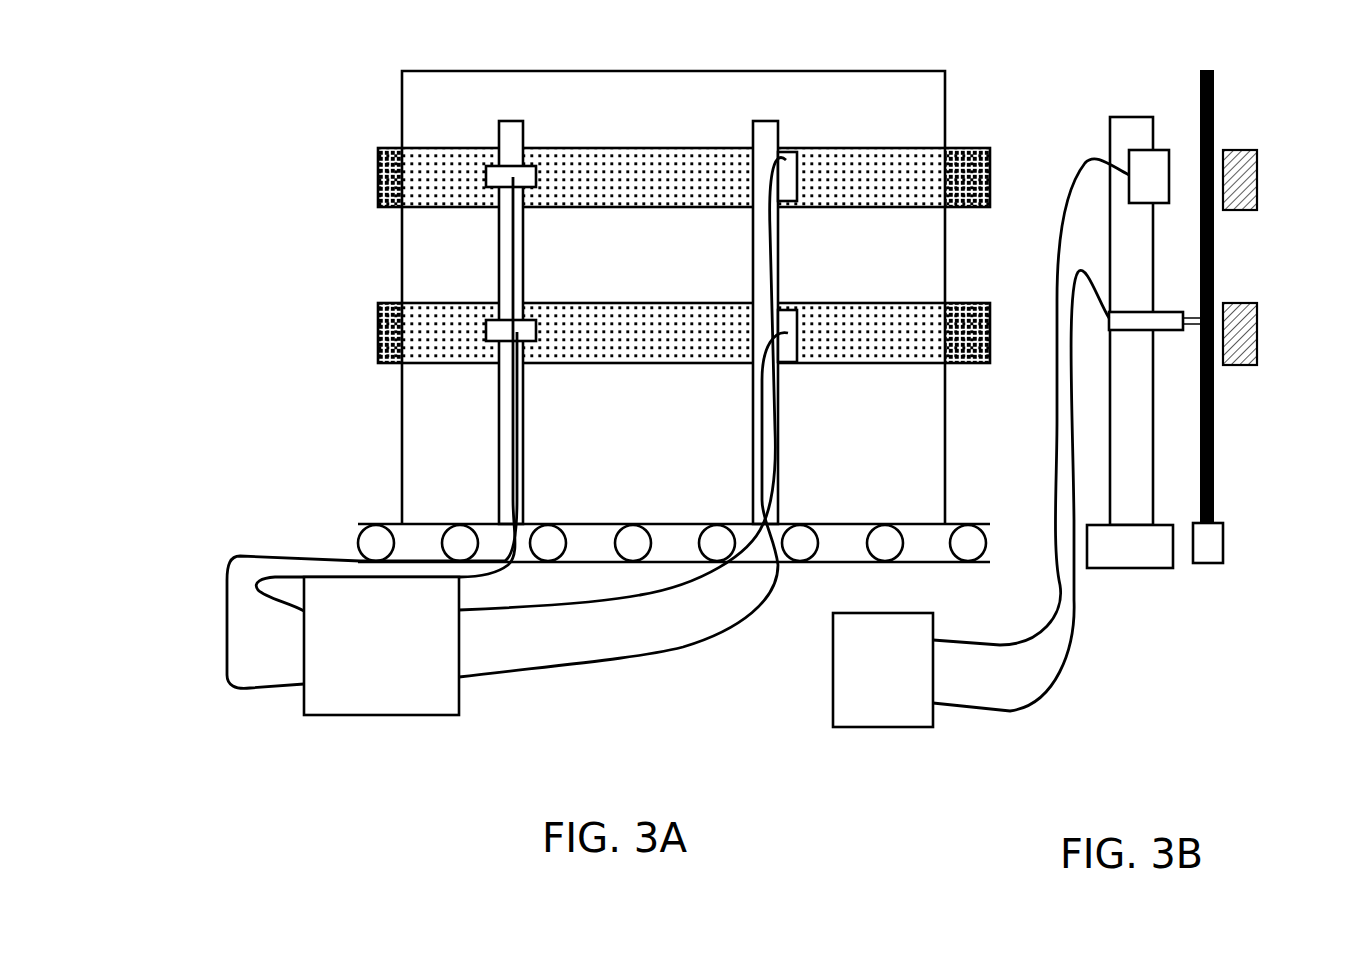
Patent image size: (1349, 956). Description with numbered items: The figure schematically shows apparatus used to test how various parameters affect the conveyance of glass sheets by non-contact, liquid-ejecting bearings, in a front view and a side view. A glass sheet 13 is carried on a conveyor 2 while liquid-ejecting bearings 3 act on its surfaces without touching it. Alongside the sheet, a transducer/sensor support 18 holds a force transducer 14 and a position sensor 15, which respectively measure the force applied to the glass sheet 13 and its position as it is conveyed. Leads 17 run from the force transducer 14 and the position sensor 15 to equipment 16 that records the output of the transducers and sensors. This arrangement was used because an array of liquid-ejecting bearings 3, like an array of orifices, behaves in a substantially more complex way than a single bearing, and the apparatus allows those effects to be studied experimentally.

In FIG. 3A, the conveyor 2 is at (373, 540).
In FIG. 3B, the conveyor 2 is at (1207, 548).
In FIG. 3A, the liquid-ejecting bearing 3 is at (378, 168).
In FIG. 3B, the liquid-ejecting bearing 3 is at (1257, 188).
In FIG. 3A, the glass sheet 13 is at (898, 71).
In FIG. 3B, the glass sheet 13 is at (1210, 70).
In FIG. 3A, the force transducer 14 is at (530, 178).
In FIG. 3B, the force transducer 14 is at (1133, 322).
In FIG. 3A, the position sensor 15 is at (790, 183).
In FIG. 3B, the position sensor 15 is at (1157, 172).
In FIG. 3A, the recording equipment 16 is at (381, 646).
In FIG. 3B, the recording equipment 16 is at (883, 670).
In FIG. 3A, the leads 17 is at (230, 612).
In FIG. 3B, the leads 17 is at (1005, 642).
In FIG. 3A, the transducer/sensor support 18 is at (497, 388).
In FIG. 3B, the transducer/sensor support 18 is at (1123, 142).